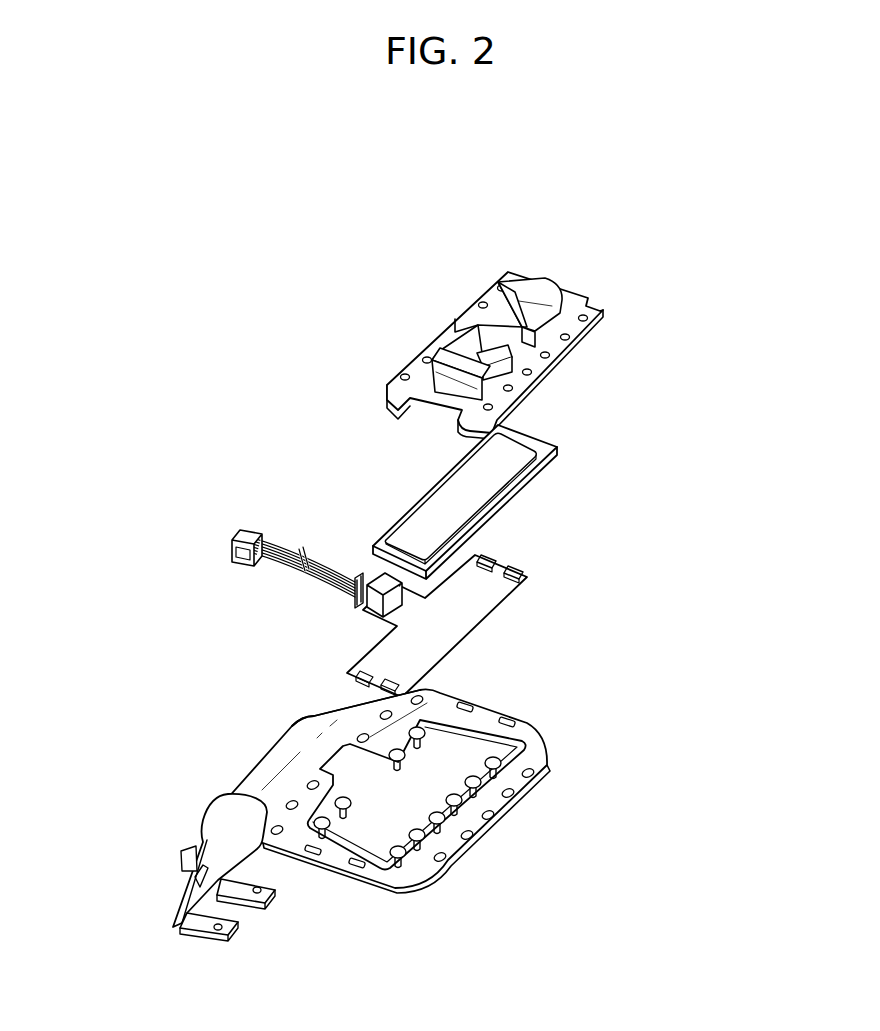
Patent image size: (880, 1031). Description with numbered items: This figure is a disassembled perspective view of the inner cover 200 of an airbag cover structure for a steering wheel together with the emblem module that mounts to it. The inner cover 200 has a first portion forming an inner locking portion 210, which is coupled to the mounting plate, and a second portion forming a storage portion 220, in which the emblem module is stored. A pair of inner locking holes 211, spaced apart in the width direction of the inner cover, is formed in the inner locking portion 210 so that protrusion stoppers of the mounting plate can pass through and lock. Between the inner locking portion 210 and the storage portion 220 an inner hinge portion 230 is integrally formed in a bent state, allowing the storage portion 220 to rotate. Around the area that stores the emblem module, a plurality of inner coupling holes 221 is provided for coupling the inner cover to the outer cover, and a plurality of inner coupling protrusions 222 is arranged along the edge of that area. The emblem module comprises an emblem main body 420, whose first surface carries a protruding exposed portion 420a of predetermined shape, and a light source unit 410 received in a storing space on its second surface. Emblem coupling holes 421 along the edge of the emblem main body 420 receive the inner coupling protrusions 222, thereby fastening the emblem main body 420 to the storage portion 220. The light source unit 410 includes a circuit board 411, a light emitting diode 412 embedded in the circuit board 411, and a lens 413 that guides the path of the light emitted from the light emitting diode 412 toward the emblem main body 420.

The inner cover 200 is at (434, 838).
The inner locking portion 210 is at (224, 881).
The inner locking holes 211 is at (205, 872).
The storage portion 220 is at (532, 760).
The inner coupling holes 221 is at (507, 795).
The inner coupling protrusions 222 is at (433, 834).
The inner hinge portion 230 is at (306, 744).
The light source unit 410 is at (481, 561).
The circuit board 411 is at (488, 600).
The light emitting diode (LED) 412 is at (520, 566).
The lens 413 is at (510, 502).
The emblem main body 420 is at (434, 313).
The exposed portion 420a is at (545, 287).
The emblem coupling holes 421 is at (502, 288).